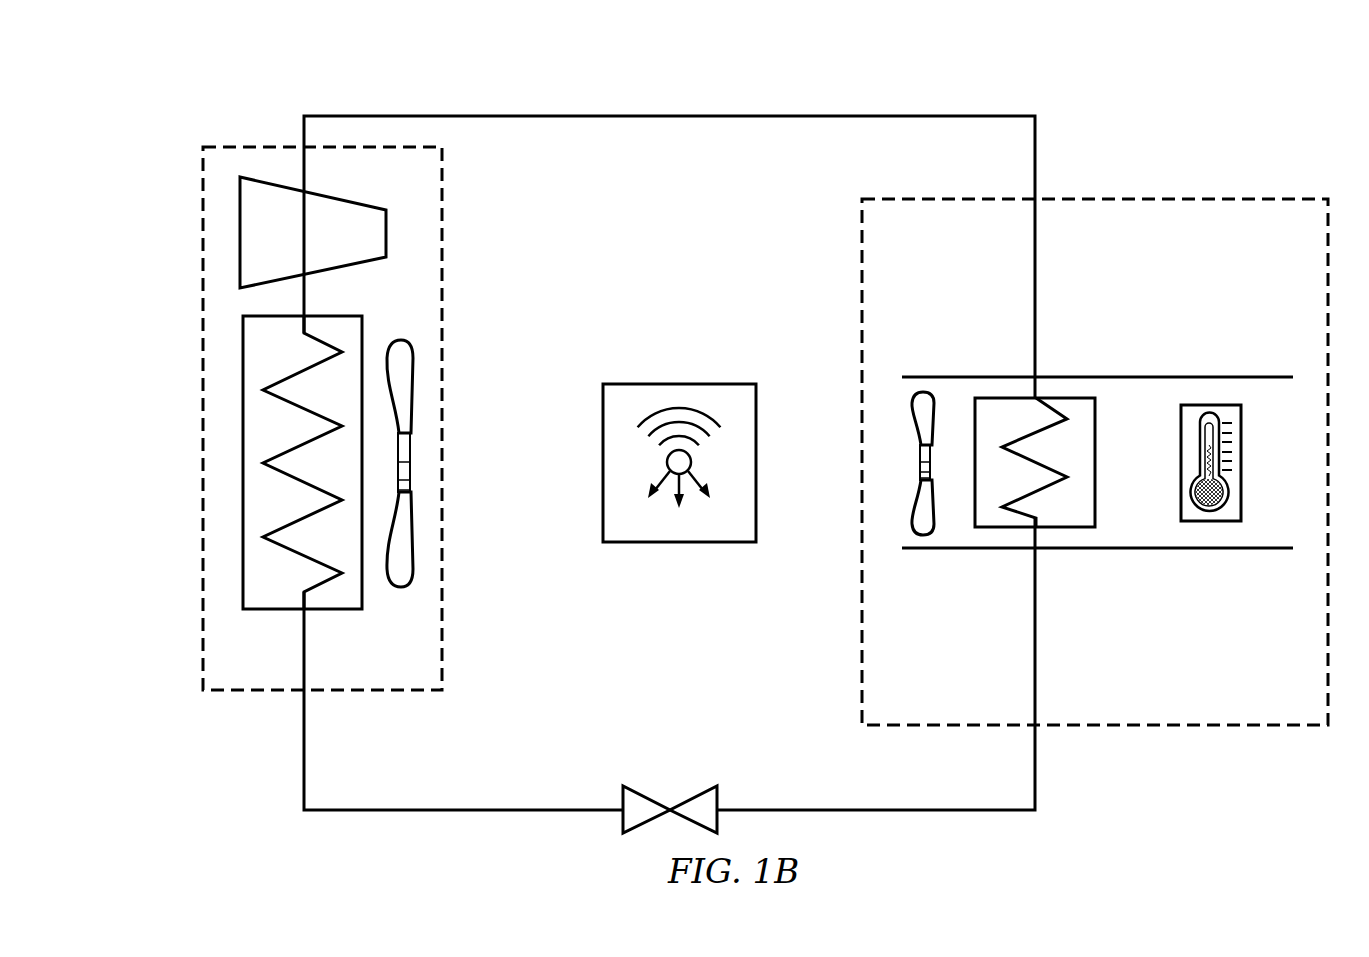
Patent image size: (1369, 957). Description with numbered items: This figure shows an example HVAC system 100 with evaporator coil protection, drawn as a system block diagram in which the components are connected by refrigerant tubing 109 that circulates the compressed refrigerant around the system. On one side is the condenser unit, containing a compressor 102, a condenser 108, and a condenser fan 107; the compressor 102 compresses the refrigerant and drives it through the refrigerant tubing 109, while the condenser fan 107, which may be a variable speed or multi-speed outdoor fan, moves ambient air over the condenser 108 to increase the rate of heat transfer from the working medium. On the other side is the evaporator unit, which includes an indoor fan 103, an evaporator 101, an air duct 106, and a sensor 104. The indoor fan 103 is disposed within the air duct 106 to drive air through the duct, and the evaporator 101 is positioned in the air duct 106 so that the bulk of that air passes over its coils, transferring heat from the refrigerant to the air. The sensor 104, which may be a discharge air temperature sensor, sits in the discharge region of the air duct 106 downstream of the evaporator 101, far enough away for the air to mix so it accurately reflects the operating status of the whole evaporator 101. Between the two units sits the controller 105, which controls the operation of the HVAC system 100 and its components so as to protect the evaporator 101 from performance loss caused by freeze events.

The HVAC system 100 is at (1008, 62).
The evaporator 101 is at (1061, 527).
The compressor 102 is at (240, 200).
The indoor fan 103 is at (912, 510).
The sensor 104 is at (1243, 470).
The controller 105 is at (603, 426).
The air duct 106 is at (1145, 377).
The condenser fan 107 is at (412, 400).
The condenser 108 is at (243, 472).
The refrigerant tubing 109 is at (556, 116).